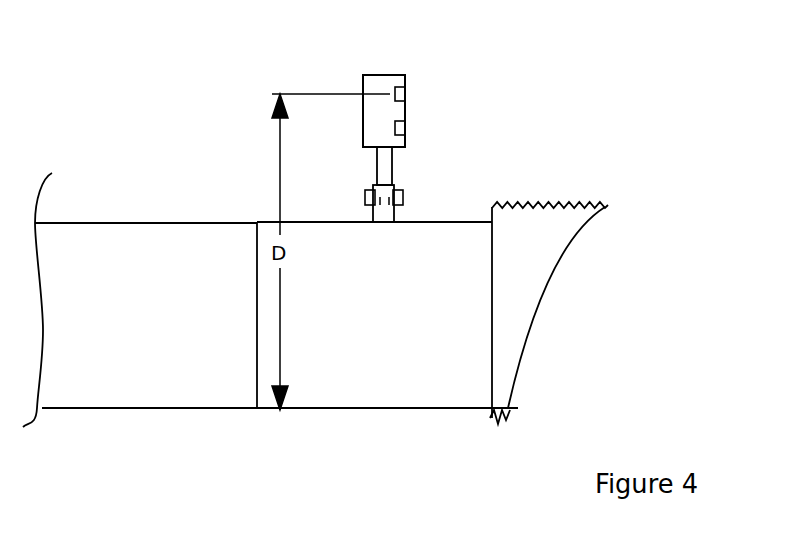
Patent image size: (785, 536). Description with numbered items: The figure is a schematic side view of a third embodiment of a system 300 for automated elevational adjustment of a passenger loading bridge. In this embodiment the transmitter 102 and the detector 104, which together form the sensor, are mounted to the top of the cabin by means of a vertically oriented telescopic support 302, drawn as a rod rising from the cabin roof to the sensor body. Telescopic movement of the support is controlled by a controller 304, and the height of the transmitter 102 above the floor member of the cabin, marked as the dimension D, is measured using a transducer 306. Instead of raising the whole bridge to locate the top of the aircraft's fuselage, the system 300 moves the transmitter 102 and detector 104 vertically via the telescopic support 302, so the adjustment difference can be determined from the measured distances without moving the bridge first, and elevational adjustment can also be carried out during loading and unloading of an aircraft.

The system for automated elevational adjustment 300 is at (665, 13).
The transmitter 102 is at (406, 93).
The detector 104 is at (406, 128).
The telescopic support 302 is at (376, 168).
The controller 304 is at (407, 195).
The transducer 306 is at (365, 195).